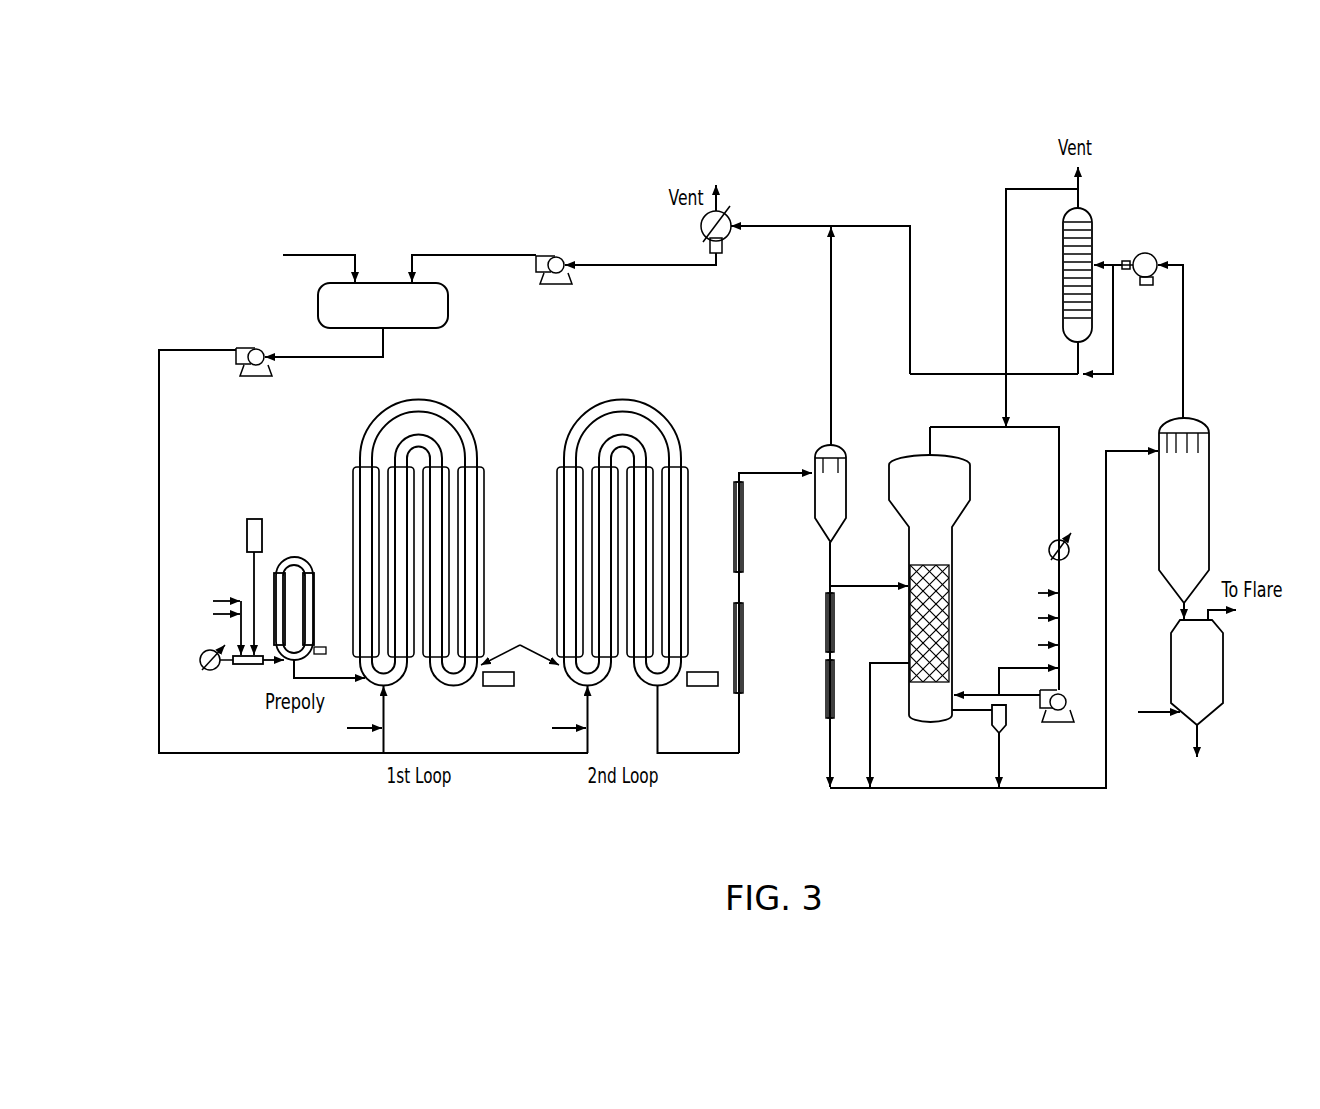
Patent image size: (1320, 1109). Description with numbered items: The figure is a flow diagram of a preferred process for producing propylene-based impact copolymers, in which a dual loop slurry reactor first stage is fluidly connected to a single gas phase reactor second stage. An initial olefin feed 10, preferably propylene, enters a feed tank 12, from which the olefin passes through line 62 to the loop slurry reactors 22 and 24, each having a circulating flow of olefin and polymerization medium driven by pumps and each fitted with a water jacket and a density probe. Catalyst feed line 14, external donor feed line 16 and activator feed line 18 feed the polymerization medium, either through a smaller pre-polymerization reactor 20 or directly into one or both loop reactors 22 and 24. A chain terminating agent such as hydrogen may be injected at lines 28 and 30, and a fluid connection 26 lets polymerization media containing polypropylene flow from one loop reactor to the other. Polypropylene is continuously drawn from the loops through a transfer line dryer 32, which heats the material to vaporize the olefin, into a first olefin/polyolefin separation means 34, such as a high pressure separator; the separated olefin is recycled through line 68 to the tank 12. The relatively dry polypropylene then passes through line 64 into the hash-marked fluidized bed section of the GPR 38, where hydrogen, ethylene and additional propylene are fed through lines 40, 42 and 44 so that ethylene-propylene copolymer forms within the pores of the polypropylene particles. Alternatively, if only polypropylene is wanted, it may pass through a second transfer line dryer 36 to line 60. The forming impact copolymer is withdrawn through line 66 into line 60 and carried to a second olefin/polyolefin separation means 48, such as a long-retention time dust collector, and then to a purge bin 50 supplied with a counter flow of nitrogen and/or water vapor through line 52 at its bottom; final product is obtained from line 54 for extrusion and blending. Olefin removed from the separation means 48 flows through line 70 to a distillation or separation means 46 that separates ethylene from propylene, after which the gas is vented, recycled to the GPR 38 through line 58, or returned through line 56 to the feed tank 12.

The olefin feed 10 is at (307, 255).
The feed tank 12 is at (317, 305).
The catalyst feed line 14 is at (253, 518).
The external donor feed line 16 is at (227, 598).
The activator feed line 18 is at (227, 618).
The pre-polymerization reactor 20 is at (293, 556).
The loop slurry reactor 22 is at (452, 405).
The loop slurry reactor 24 is at (658, 406).
The fluid connection 26 is at (520, 645).
The chain terminating agent line 28 is at (360, 730).
The chain terminating agent line 30 is at (560, 730).
The transfer line dryer 32 is at (743, 648).
The first olefin/polyolefin separation means 34 is at (840, 447).
The second transfer line dryer 36 is at (826, 690).
The gas phase reactor 38 is at (972, 480).
The gas feed line 40 is at (1042, 592).
The gas feed line 42 is at (1042, 617).
The gas feed line 44 is at (1042, 644).
The distillation or separation means 46 is at (1093, 227).
The second olefin/polyolefin separation means 48 is at (1210, 463).
The purge bin 50 is at (1224, 688).
The purge line 52 is at (1160, 714).
The product line 54 is at (1203, 738).
The recycle line 56 is at (873, 225).
The recirculation line 58 is at (1062, 443).
The transfer line 60 is at (1022, 790).
The olefin line 62 is at (159, 473).
The polypropylene transfer line 64 is at (888, 585).
The withdrawal line 66 is at (871, 758).
The olefin recycle line 68 is at (830, 313).
The olefin line 70 is at (1184, 337).